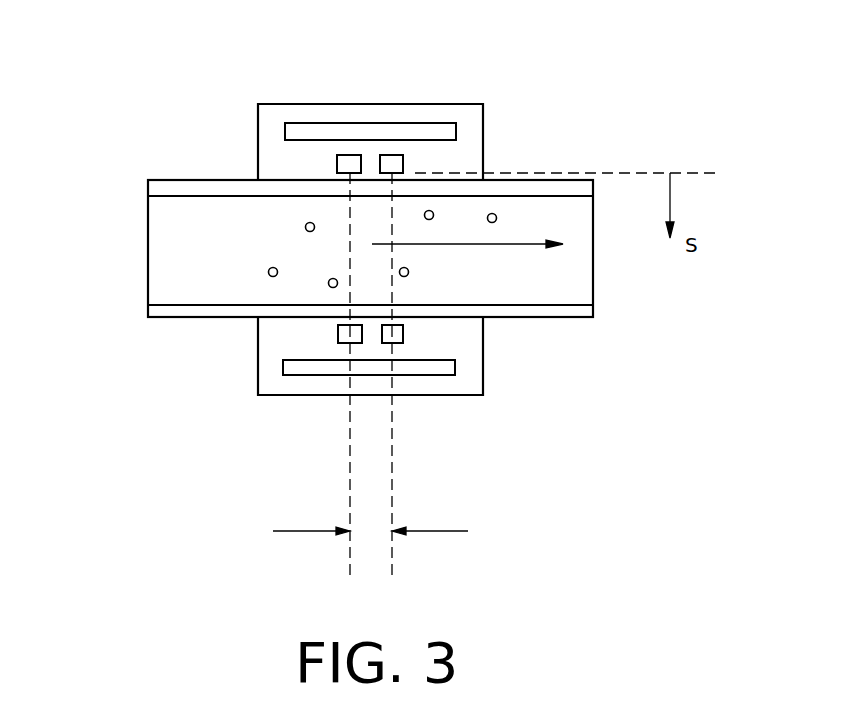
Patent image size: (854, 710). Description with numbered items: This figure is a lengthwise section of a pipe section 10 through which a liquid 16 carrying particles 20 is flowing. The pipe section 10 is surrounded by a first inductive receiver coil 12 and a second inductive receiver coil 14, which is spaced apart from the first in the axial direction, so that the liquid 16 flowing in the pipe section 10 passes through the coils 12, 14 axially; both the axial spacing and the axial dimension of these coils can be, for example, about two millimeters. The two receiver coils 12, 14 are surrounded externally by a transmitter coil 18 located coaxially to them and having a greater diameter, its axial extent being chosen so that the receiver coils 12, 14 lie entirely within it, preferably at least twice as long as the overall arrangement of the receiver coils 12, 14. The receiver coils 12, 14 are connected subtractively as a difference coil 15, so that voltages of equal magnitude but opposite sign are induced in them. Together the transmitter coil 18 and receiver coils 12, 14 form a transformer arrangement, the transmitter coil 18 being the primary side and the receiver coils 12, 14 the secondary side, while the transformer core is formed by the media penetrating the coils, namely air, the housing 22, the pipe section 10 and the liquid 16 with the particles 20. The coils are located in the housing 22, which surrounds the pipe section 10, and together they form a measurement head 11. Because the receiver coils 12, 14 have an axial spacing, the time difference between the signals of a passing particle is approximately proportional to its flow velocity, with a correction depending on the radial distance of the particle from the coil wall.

The pipe section 10 is at (183, 187).
The measurement head 11 is at (186, 374).
The first inductive receiver coil 12 is at (349, 155).
The second inductive receiver coil 14 is at (391, 155).
The difference coil 15 is at (368, 352).
The liquid 16 is at (540, 289).
The transmitter coil 18 is at (297, 130).
The particles 20 is at (429, 210).
The housing 22 is at (503, 349).